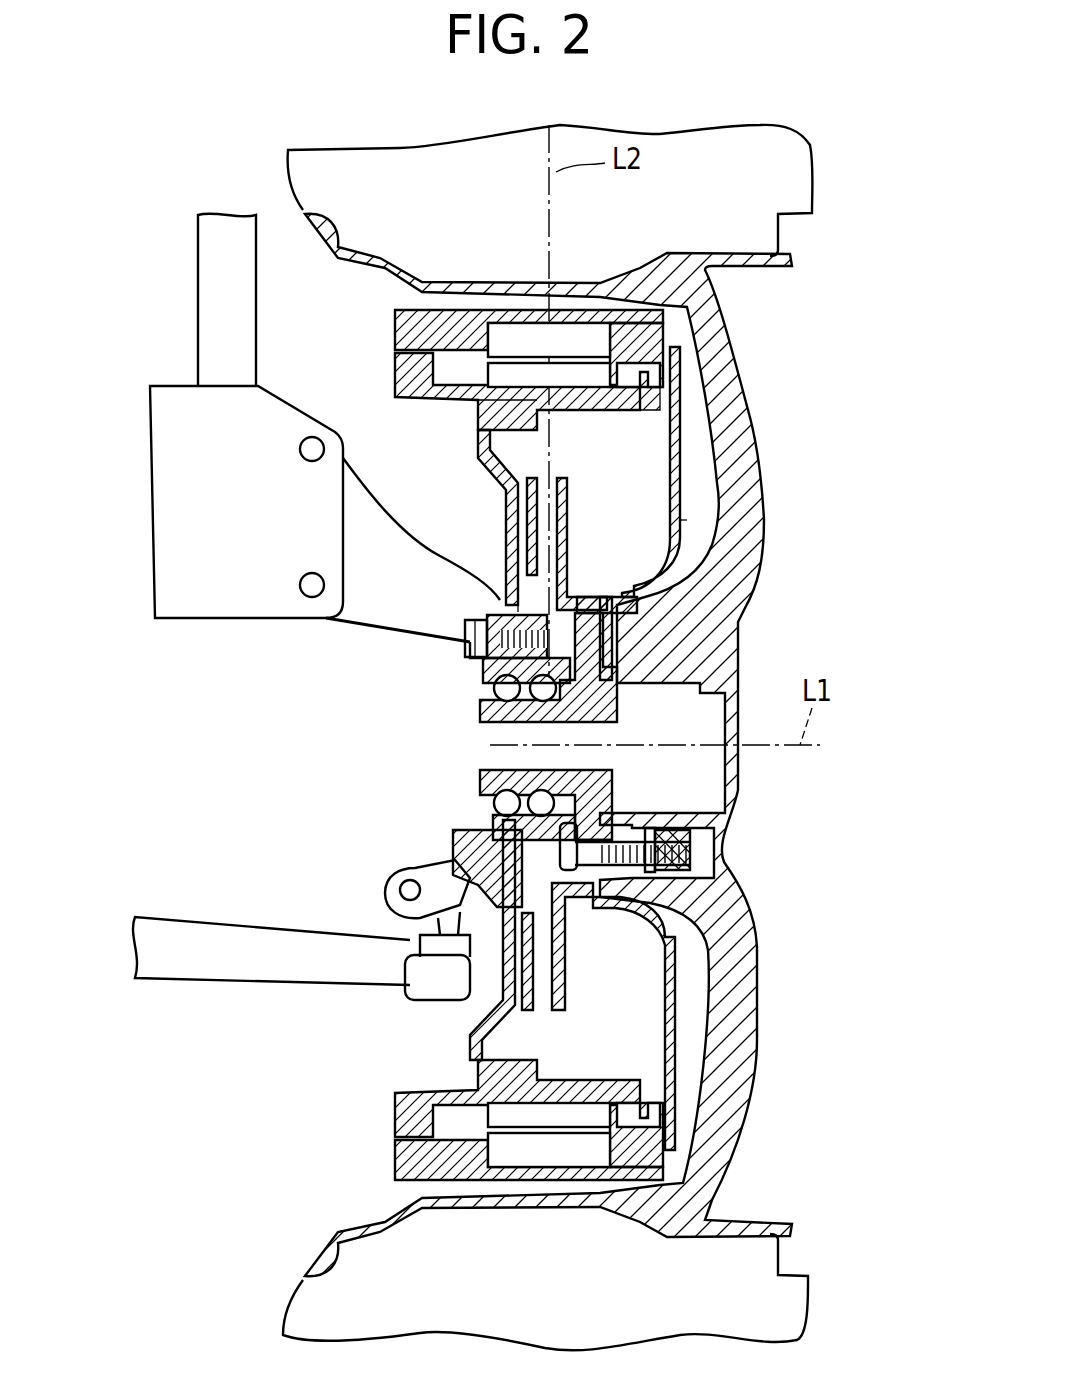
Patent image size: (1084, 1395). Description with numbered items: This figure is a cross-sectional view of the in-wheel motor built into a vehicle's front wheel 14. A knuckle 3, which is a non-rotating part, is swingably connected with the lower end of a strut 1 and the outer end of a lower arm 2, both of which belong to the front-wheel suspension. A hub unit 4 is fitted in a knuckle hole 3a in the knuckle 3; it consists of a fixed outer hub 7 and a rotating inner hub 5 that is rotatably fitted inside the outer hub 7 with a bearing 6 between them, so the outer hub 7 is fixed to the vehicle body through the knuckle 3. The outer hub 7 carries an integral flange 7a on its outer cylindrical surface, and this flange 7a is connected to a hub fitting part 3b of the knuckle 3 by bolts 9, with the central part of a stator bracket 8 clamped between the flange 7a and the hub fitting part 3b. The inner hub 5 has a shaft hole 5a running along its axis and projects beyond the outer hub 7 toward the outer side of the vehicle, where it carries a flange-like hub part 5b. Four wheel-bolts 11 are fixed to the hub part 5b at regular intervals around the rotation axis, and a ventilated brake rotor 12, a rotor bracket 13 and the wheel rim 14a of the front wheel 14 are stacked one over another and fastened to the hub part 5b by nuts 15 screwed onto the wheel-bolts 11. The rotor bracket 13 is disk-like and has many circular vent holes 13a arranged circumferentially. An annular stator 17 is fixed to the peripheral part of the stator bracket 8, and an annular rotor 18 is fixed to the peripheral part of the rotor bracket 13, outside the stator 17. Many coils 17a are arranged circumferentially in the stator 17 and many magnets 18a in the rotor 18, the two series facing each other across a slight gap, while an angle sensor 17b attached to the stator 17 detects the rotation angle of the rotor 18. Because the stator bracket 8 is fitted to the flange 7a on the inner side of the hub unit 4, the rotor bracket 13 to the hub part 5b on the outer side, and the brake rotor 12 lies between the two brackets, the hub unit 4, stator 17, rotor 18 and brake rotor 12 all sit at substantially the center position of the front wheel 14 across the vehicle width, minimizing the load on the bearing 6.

The strut 1 is at (215, 288).
The lower arm 2 is at (180, 965).
The knuckle 3 is at (372, 520).
The knuckle hole 3a is at (465, 655).
The hub fitting part 3b is at (470, 605).
The hub unit 4 is at (475, 750).
The inner hub 5 is at (485, 722).
The shaft hole 5a is at (497, 767).
The hub part 5b is at (670, 935).
The bearing 6 is at (480, 700).
The outer hub 7 is at (490, 662).
The flange 7a is at (520, 603).
The stator bracket 8 is at (500, 490).
The bolts 9 is at (465, 636).
The wheel-bolts 11 is at (692, 855).
The brake rotor 12 is at (562, 505).
The rotor bracket 13 is at (690, 552).
The vent holes 13a is at (682, 522).
The front wheel 14 is at (792, 188).
The wheel rim 14a is at (733, 423).
The nuts 15 is at (695, 868).
The stator 17 is at (395, 373).
The coils 17a is at (483, 373).
The angle sensor 17b is at (645, 372).
The rotor 18 is at (638, 332).
The magnets 18a is at (580, 343).